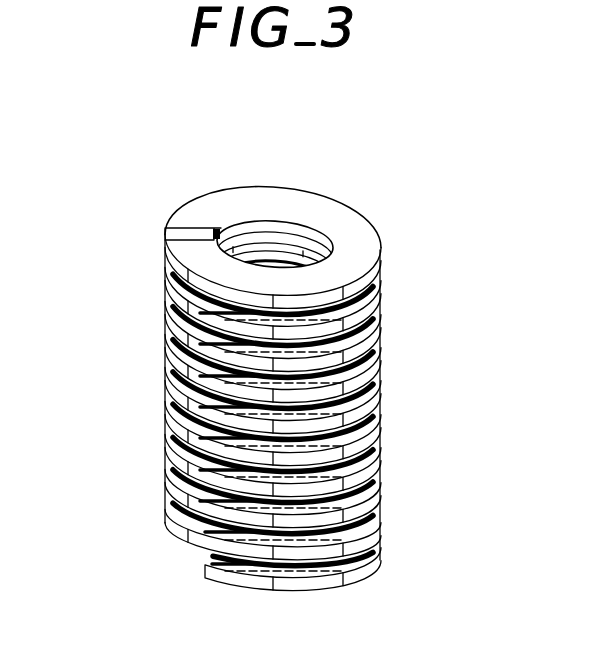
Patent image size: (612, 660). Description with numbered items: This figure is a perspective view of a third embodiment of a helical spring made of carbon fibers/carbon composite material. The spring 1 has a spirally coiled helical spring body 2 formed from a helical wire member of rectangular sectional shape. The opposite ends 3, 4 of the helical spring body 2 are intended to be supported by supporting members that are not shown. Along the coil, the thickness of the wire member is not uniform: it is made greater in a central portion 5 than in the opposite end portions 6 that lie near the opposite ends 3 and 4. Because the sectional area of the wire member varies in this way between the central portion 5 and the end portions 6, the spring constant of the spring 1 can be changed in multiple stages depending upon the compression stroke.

The spring 1 is at (393, 293).
The helical spring body 2 is at (163, 392).
The end 3 is at (183, 228).
The end 4 is at (205, 579).
The central portion 5 is at (383, 327).
The end portions 6 is at (157, 214).